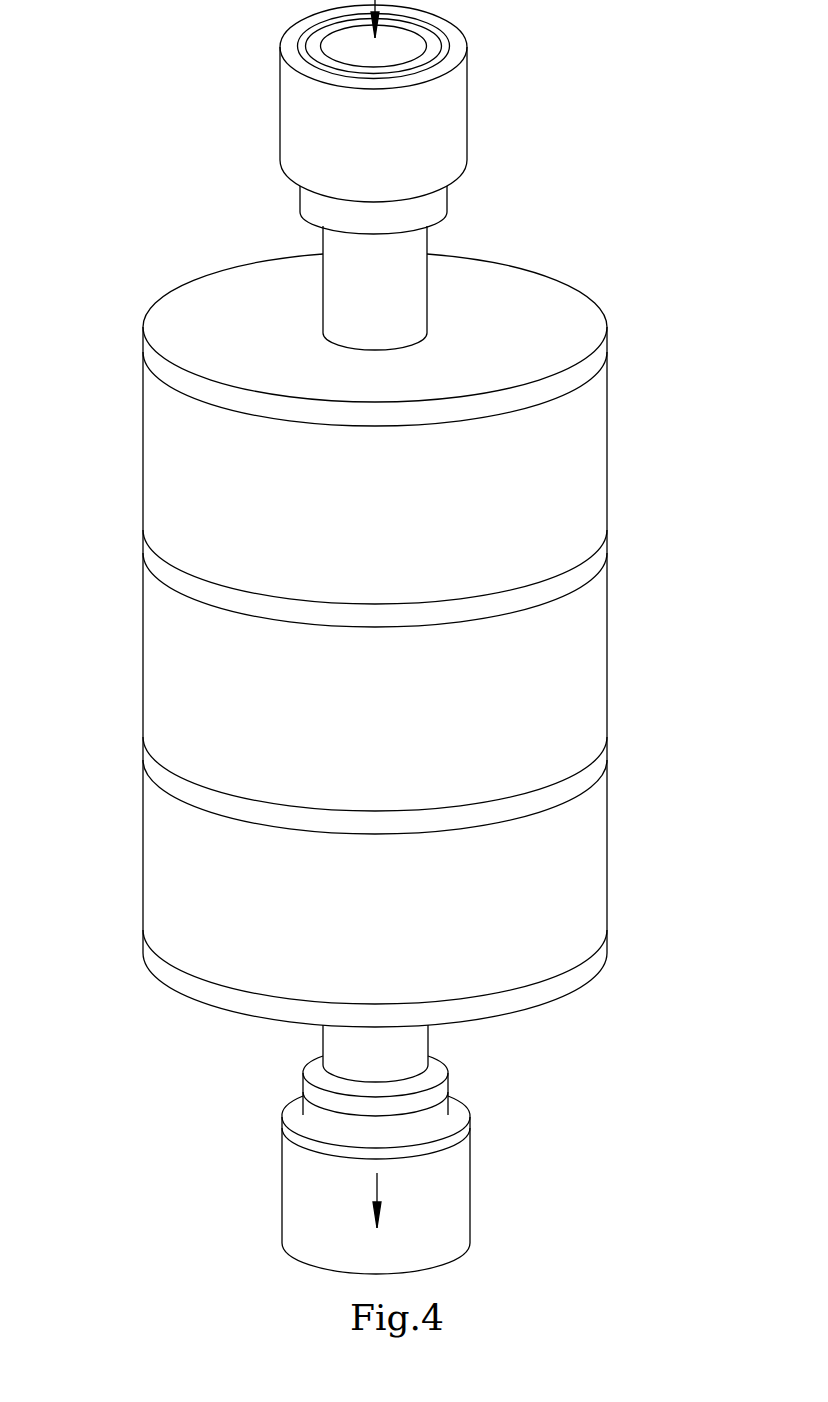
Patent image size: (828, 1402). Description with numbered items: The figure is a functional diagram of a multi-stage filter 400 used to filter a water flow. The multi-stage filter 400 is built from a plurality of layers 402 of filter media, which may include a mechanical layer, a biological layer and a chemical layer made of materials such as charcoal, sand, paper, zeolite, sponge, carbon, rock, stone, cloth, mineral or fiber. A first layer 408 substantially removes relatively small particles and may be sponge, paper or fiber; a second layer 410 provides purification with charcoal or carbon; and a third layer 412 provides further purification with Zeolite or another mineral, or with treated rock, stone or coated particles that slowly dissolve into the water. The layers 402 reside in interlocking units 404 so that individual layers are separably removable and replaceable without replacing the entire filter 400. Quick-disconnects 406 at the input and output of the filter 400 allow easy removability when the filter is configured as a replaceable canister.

The multi-stage filter 400 is at (158, 105).
The layers of filter media 402 is at (578, 473).
The interlocking units 404 is at (130, 328).
The quick-disconnects 406 is at (467, 103).
The first layer 408 is at (597, 437).
The second layer 410 is at (597, 634).
The third layer 412 is at (597, 841).